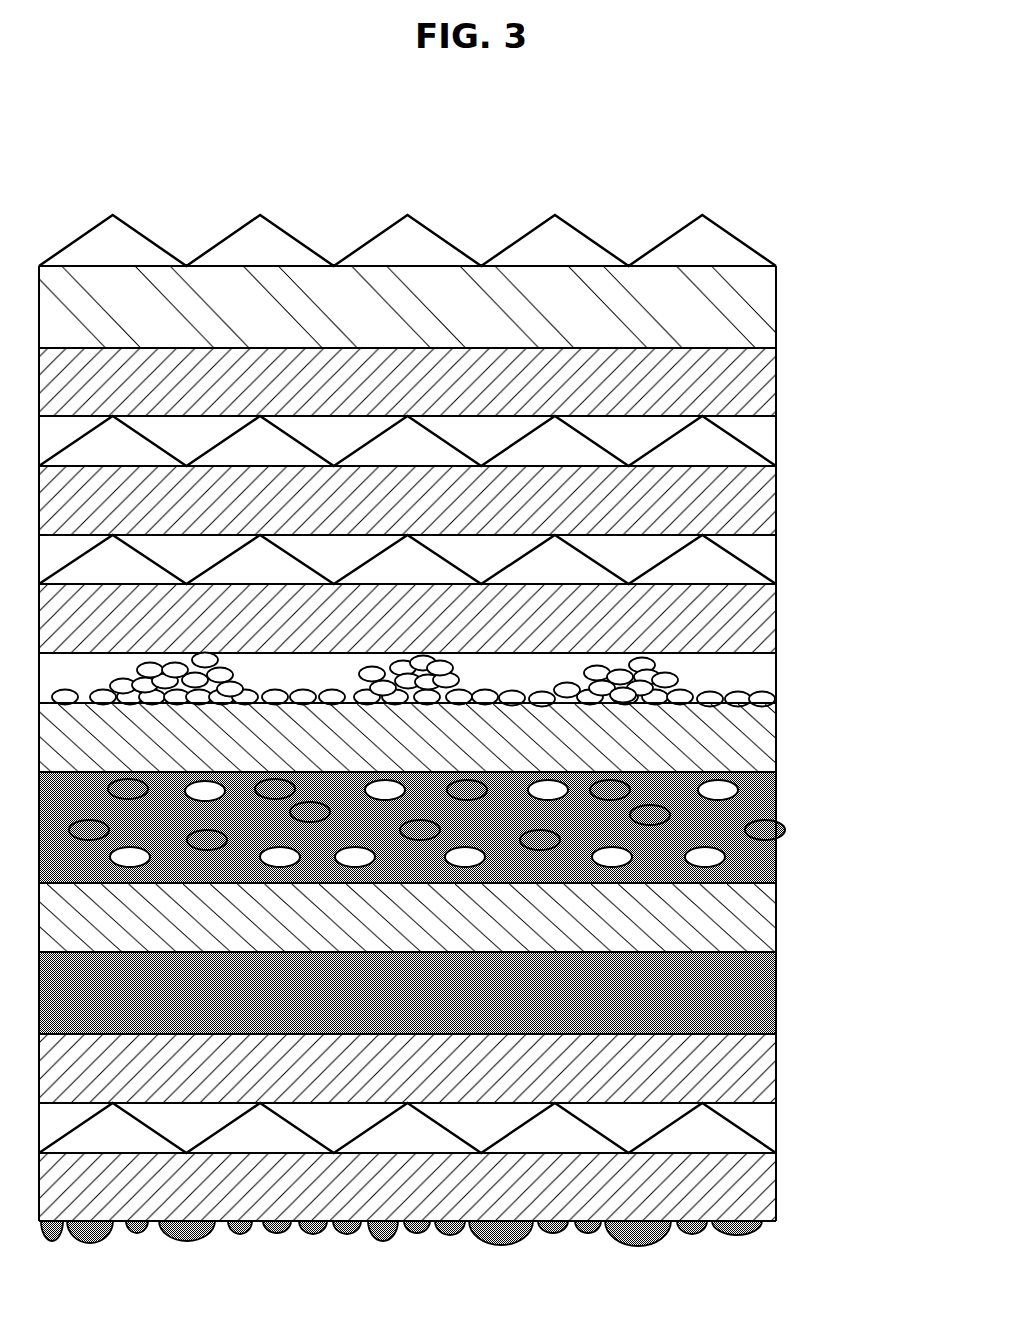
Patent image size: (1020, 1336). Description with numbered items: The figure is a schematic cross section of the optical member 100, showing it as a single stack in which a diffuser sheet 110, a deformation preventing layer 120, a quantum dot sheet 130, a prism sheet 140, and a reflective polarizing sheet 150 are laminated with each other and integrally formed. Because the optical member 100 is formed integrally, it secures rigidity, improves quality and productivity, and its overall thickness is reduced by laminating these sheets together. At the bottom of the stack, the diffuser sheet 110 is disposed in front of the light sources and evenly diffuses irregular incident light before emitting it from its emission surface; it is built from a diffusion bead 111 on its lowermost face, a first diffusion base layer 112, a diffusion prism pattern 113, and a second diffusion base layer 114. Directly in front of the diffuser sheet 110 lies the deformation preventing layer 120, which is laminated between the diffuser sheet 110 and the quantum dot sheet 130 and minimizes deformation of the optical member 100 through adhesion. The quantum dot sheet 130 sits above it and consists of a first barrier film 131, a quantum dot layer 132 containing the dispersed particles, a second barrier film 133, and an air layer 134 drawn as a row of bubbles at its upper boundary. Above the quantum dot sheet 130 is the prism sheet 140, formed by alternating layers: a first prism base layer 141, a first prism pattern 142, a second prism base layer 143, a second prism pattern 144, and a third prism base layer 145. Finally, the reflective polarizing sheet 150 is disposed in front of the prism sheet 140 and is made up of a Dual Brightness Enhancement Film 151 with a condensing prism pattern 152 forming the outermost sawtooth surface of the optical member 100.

The optical member 100 is at (90, 167).
The diffuser sheet 110 is at (475, 1140).
The diffusion bead 111 is at (444, 1229).
The first diffusion base layer 112 is at (765, 1184).
The diffusion prism pattern 113 is at (740, 1133).
The second diffusion base layer 114 is at (765, 1077).
The deformation preventing layer 120 is at (765, 996).
The quantum dot sheet 130 is at (475, 803).
The first barrier film 131 is at (443, 918).
The quantum dot layer 132 is at (765, 829).
The second barrier film 133 is at (765, 740).
The air layer 134 is at (765, 680).
The prism sheet 140 is at (473, 500).
The first prism base layer 141 is at (443, 618).
The first prism pattern 142 is at (750, 560).
The second prism base layer 143 is at (765, 497).
The second prism pattern 144 is at (750, 447).
The third prism base layer 145 is at (765, 385).
The reflective polarizing sheet 150 is at (473, 281).
The Dual Brightness Enhancement Film 151 is at (762, 300).
The condensing prism pattern 152 is at (748, 248).